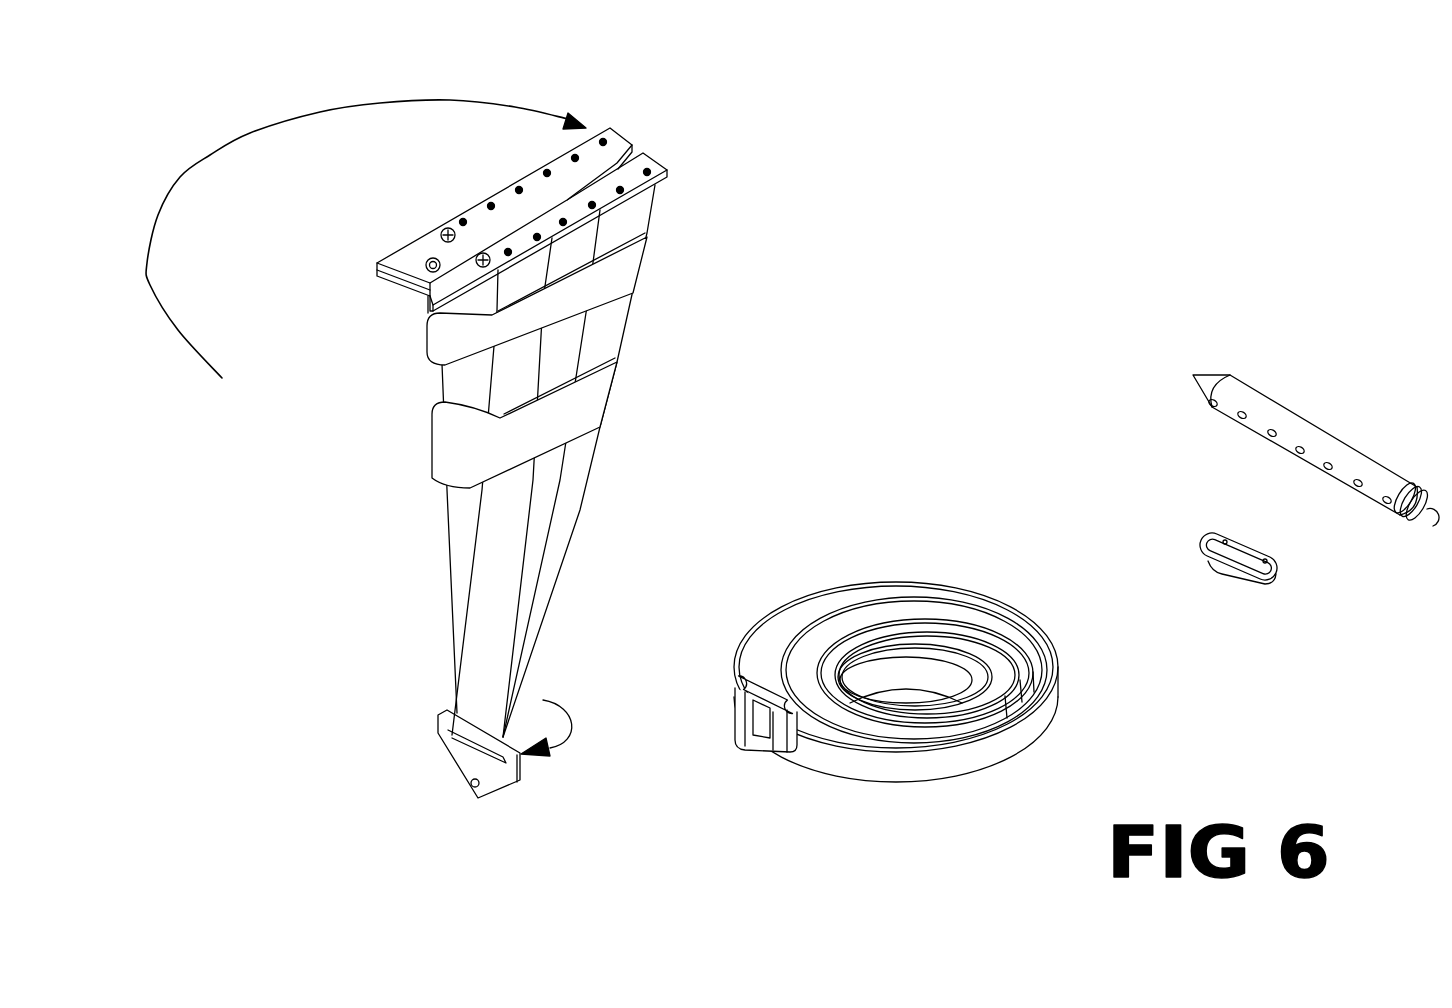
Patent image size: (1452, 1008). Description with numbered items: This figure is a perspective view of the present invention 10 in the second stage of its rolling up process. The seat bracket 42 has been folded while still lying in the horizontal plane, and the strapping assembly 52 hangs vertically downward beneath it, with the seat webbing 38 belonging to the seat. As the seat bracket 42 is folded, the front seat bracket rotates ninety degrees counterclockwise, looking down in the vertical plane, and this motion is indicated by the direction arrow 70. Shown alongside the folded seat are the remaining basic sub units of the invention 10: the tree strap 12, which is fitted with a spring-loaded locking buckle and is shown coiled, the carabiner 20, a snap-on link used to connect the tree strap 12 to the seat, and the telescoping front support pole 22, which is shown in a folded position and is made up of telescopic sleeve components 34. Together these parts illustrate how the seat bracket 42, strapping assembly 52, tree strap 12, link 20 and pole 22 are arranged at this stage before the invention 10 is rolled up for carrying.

The present invention 10 is at (275, 468).
The tree strap 12 is at (1023, 608).
The carabiner 20 is at (1232, 579).
The telescoping front support pole 22 is at (1313, 423).
The telescopic sleeve components 34 is at (476, 800).
The seat webbing 38 is at (639, 285).
The seat bracket 42 is at (664, 170).
The strapping assembly 52 is at (465, 533).
The direction arrow 70 is at (257, 137).